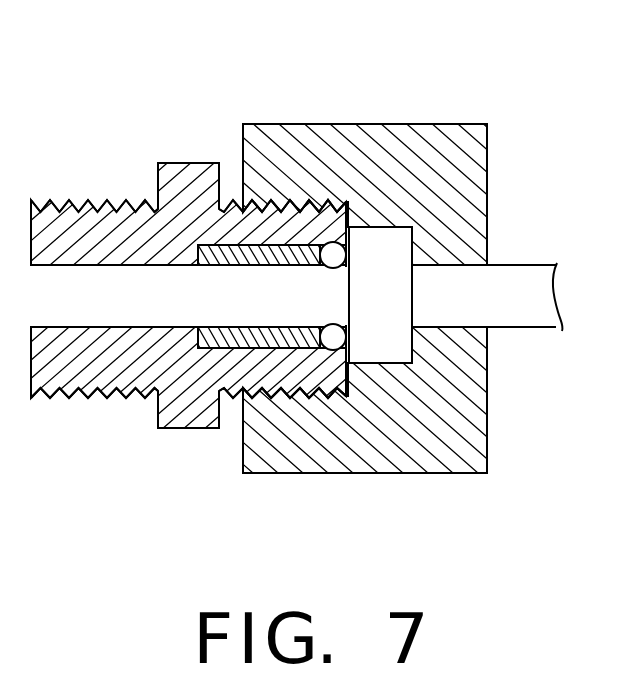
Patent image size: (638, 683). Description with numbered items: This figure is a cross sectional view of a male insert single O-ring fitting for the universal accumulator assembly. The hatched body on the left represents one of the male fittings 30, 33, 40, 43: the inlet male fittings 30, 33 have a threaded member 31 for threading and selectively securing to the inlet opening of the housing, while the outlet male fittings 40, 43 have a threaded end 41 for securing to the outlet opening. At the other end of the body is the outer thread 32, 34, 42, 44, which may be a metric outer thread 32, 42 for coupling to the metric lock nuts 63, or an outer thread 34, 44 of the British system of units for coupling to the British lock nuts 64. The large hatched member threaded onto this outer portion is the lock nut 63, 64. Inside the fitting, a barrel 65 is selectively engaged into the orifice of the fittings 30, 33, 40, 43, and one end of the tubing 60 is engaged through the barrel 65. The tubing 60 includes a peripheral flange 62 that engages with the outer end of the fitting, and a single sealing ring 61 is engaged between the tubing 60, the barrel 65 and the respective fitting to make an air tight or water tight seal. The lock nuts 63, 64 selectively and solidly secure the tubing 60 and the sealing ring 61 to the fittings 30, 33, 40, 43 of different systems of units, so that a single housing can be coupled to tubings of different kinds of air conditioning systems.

The inlet male fitting 30 is at (315, 366).
The inlet male fitting 33 is at (315, 366).
The outlet male fitting 40 is at (315, 366).
The outlet male fitting 43 is at (187, 430).
The threaded member 31 is at (94, 335).
The threaded end 41 is at (109, 398).
The outer thread 32 is at (337, 385).
The outer thread 34 is at (337, 385).
The outer thread 42 is at (337, 385).
The outer thread 44 is at (242, 392).
The metric lock nut 63 is at (319, 317).
The British lock nut 64 is at (457, 453).
The barrel 65 is at (255, 246).
The sealing ring 61 is at (330, 248).
The peripheral flange 62 is at (382, 257).
The tubing 60 is at (530, 312).